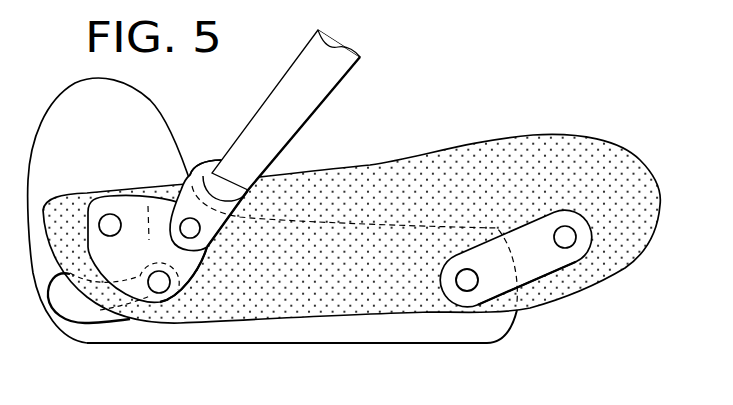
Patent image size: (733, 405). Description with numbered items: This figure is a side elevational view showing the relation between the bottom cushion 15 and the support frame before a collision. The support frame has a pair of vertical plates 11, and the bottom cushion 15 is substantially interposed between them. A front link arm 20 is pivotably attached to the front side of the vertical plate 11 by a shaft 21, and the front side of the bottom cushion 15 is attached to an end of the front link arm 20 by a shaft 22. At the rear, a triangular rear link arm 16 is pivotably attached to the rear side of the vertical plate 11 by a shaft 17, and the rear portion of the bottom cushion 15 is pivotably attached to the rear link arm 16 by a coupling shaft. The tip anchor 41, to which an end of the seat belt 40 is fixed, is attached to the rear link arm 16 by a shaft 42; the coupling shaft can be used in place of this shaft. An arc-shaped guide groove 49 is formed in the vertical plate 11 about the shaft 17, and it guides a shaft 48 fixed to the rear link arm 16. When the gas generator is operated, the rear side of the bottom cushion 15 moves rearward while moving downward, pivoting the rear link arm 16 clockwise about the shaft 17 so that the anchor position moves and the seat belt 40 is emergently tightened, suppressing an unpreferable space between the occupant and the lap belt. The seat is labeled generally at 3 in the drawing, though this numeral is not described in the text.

The seat frame assembly 3 is at (492, 136).
The bottom cushion 15 is at (600, 165).
The rear link arm 16 is at (134, 202).
The shaft 17 is at (110, 225).
The tip anchor 41 is at (190, 182).
The seat belt 40 is at (300, 106).
The shaft 42 is at (192, 230).
The shaft 48 is at (160, 283).
The guide groove 49 is at (80, 300).
The vertical plate 11 is at (388, 325).
The front link arm 20 is at (538, 260).
The shaft 21 is at (467, 282).
The shaft 22 is at (565, 237).